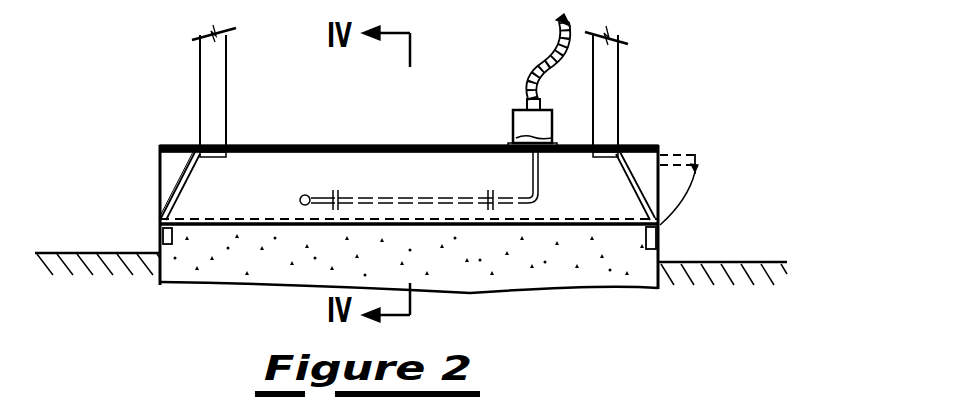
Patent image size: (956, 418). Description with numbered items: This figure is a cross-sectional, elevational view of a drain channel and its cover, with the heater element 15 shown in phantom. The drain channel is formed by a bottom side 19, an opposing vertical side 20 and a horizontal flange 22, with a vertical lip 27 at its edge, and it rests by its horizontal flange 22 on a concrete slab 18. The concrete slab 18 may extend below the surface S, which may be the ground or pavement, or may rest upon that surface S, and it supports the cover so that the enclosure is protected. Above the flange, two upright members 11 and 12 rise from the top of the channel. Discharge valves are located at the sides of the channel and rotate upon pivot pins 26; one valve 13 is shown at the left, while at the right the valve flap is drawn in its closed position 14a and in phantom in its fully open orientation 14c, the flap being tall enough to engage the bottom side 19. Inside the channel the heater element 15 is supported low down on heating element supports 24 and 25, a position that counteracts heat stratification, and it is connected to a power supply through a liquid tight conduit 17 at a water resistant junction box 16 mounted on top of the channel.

The post 11 is at (226, 98).
The post 12 is at (618, 80).
The valve 13 is at (166, 186).
The valve flap in closed position 14a is at (690, 188).
The valve flap in fully open orientation 14c is at (690, 152).
The heater element 15 is at (413, 198).
The junction box 16 is at (512, 115).
The liquid tight conduit 17 is at (542, 70).
The concrete slab 18 is at (530, 262).
The bottom side 19 is at (298, 225).
The vertical side 20 is at (270, 201).
The horizontal flange 22 is at (273, 146).
The heating element support 24 is at (337, 198).
The heating element support 25 is at (490, 198).
The pivot pin 26 is at (190, 146).
The vertical lip 27 is at (162, 233).
The surface S is at (712, 262).